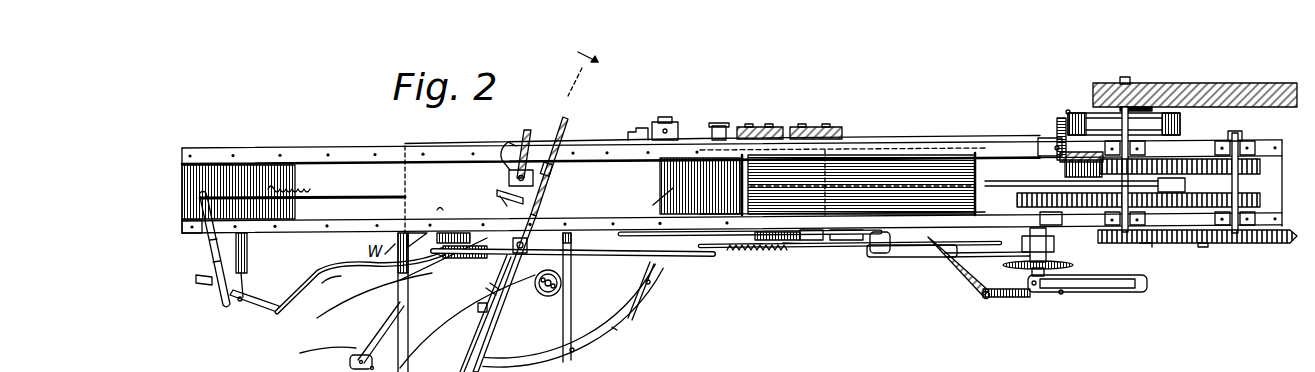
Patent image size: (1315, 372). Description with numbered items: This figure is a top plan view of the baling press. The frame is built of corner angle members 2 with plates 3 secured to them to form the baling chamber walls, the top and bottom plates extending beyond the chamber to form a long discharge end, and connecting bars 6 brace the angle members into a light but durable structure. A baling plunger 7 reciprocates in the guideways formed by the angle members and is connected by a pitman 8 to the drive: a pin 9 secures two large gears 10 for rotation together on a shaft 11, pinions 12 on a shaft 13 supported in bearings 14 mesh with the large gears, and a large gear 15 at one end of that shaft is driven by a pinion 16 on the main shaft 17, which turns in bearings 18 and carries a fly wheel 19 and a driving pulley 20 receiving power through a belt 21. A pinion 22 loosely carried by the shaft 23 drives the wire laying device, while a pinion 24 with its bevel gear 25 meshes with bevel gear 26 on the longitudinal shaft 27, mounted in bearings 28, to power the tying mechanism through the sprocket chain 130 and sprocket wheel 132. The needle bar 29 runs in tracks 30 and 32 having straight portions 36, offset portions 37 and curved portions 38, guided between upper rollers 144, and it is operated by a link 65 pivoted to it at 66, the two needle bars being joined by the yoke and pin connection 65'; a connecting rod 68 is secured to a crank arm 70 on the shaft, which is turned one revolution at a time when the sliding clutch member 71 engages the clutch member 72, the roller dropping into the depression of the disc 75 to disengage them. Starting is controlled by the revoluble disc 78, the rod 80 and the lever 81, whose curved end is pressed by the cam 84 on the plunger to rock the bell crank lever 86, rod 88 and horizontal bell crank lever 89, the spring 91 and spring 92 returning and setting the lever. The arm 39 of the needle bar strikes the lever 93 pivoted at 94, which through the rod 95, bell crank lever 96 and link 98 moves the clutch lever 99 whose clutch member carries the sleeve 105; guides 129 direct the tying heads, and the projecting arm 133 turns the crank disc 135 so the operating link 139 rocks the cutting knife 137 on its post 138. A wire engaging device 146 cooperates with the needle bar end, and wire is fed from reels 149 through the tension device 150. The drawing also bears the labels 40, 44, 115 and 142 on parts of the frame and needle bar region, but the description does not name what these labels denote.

The corner angle member 2 is at (310, 160).
The plate 3 is at (185, 183).
The connecting bar 6 is at (585, 64).
The baling plunger 7 is at (900, 177).
The pitman 8 is at (963, 188).
The pin 9 is at (1235, 140).
The large gear 10 is at (1193, 163).
The shaft 11 is at (1170, 163).
The pinion 12 is at (1099, 183).
The shaft 13 is at (1237, 245).
The bearing 14 is at (1242, 141).
The large gear 15 is at (1207, 246).
The pinion 16 is at (1143, 244).
The driving shaft 17 is at (1125, 77).
The bearing 18 is at (1120, 145).
The fly wheel 19 is at (1068, 110).
The driving pulley 20 is at (1156, 83).
The belt 21 is at (1163, 105).
The pinion 22 is at (1017, 200).
The shaft 23 is at (1061, 292).
The pinion 24 is at (1066, 168).
The bevel gear 25 is at (1055, 140).
The bevel gear 26 is at (1057, 122).
The longitudinal shaft 27 is at (890, 142).
The bearing 28 is at (543, 143).
The needle-bar 29 is at (643, 268).
The track 30 is at (324, 267).
The track 32 is at (617, 330).
The straight track portion 36 is at (267, 303).
The offset track portion 37 is at (352, 350).
The curved track portion 38 is at (563, 300).
The arm 39 is at (360, 305).
The plate 40 is at (676, 210).
The rod 44 is at (577, 285).
The link 65 is at (750, 263).
The yoke and pin connection 65' is at (418, 302).
The pivot connection 66 is at (857, 252).
The connecting rod 68 is at (983, 296).
The crank arm 70 is at (1108, 278).
The clutch member 71 is at (1048, 236).
The clutch member 72 is at (1050, 223).
The disc 75 is at (1020, 270).
The revoluble disc 78 is at (431, 207).
The rod 80 is at (487, 232).
The lever 81 is at (845, 230).
The cam 84 is at (960, 253).
The bell crank lever 86 is at (872, 262).
The rod 88 is at (910, 260).
The bell crank lever 89 is at (975, 277).
The spring 91 is at (748, 253).
The spring 92 is at (820, 240).
The lever 93 is at (213, 247).
The pivot 94 is at (187, 228).
The rod 95 is at (356, 197).
The bell crank lever 96 is at (500, 198).
The link 98 is at (505, 195).
The clutch lever 99 is at (517, 180).
The sleeve 105 is at (548, 172).
The handle 115 is at (200, 283).
The guide 129 is at (542, 212).
The sprocket chain 130 is at (527, 145).
The sprocket wheel 132 is at (530, 130).
The projecting arm 133 is at (556, 188).
The crank disc 135 is at (572, 357).
The cutting knife 137 is at (428, 275).
The post 138 is at (488, 286).
The operating link 139 is at (478, 306).
The plate 142 is at (686, 186).
The upper roller 144 is at (640, 138).
The wire engaging device 146 is at (663, 118).
The reel 149 is at (797, 123).
The tension device 150 is at (727, 122).